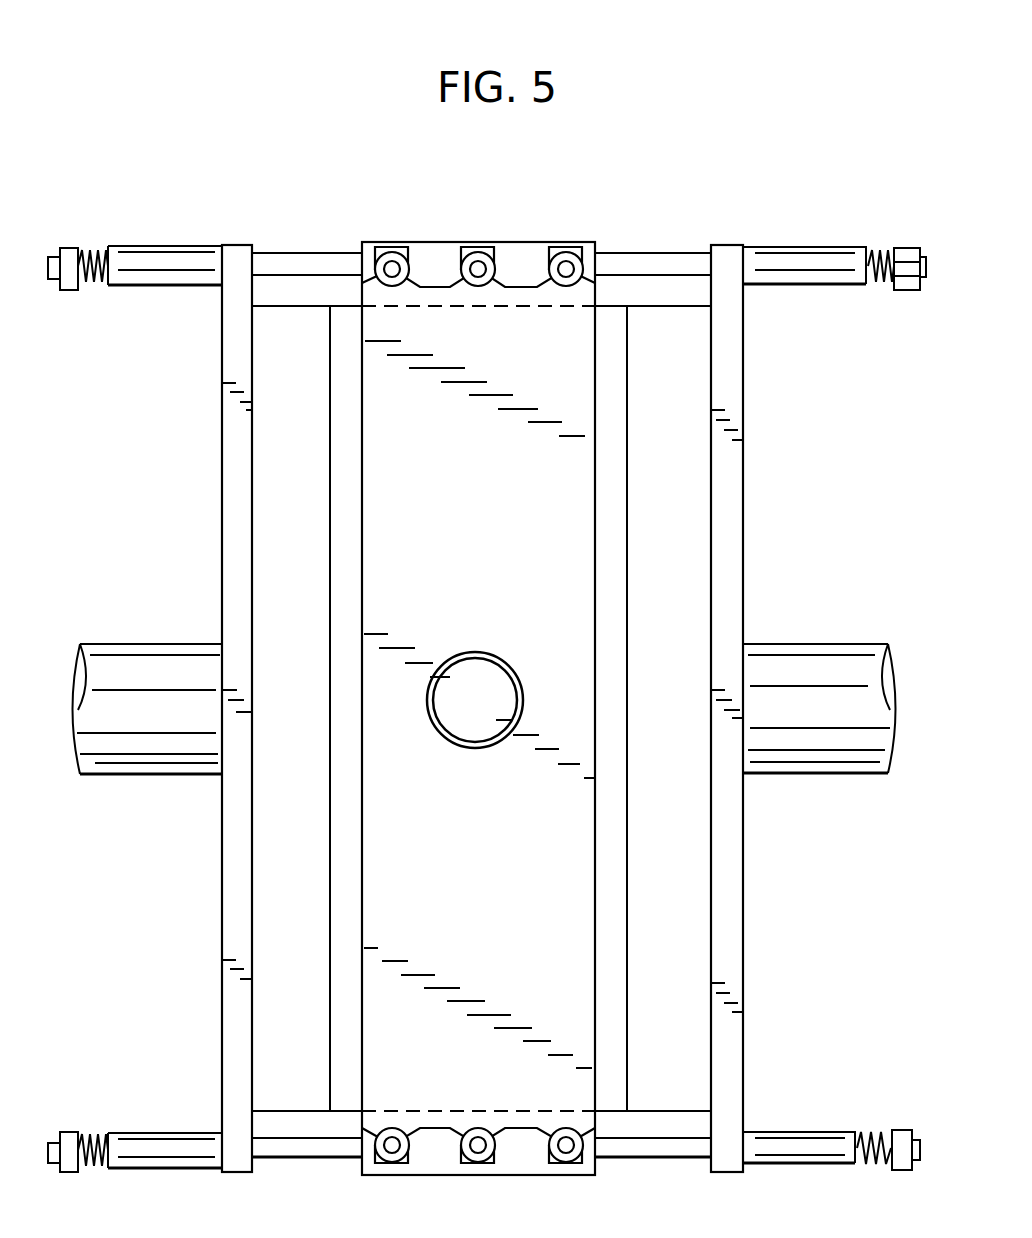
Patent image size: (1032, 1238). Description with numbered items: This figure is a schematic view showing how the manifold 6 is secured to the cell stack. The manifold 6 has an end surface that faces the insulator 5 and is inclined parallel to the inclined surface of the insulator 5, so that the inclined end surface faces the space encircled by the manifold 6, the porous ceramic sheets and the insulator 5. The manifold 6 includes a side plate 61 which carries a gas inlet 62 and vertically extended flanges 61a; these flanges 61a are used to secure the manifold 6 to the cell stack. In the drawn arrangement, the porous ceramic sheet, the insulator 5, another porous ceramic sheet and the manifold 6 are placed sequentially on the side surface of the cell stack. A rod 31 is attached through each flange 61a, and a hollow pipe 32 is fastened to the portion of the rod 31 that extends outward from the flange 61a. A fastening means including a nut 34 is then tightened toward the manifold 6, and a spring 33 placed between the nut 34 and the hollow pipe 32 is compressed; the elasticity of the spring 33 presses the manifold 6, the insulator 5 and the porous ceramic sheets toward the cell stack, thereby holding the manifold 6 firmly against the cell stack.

The insulator 5 is at (618, 465).
The manifold 6 is at (494, 665).
The rod 31 is at (673, 267).
The hollow pipe 32 is at (828, 258).
The spring 33 is at (870, 292).
The nut 34 is at (903, 243).
The side plate 61 is at (735, 905).
The flange 61a is at (728, 247).
The gas inlet 62 is at (787, 570).